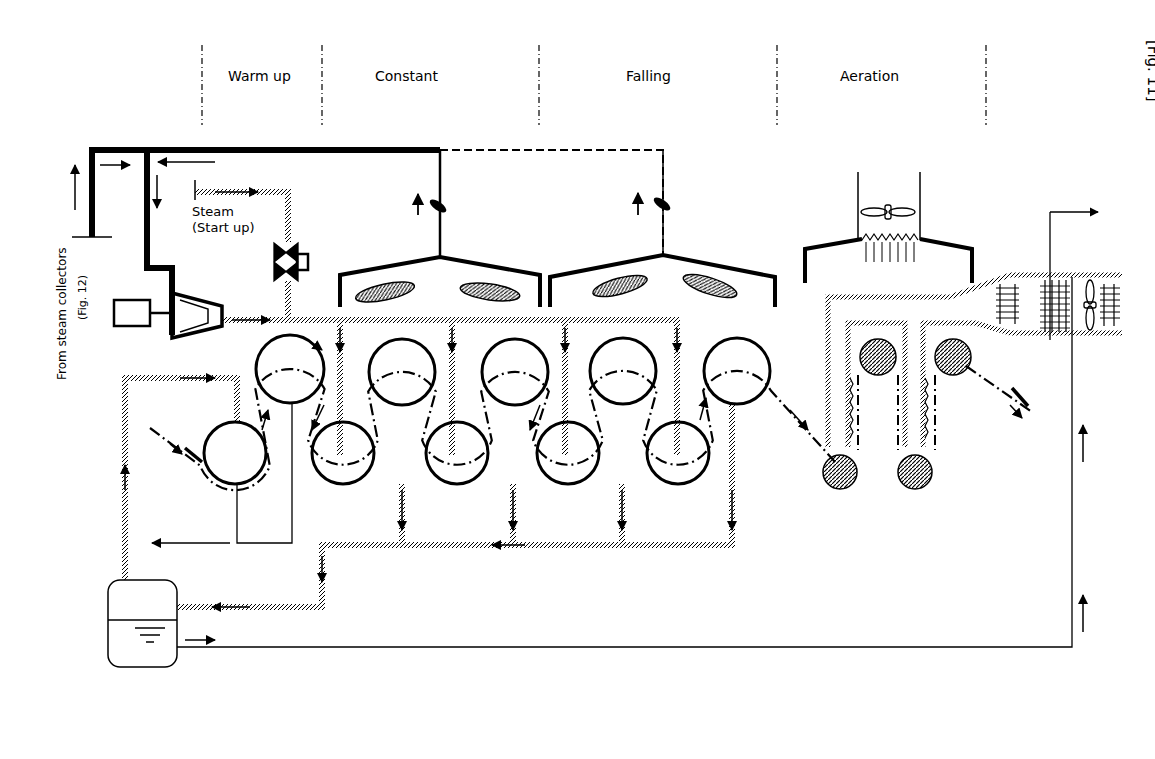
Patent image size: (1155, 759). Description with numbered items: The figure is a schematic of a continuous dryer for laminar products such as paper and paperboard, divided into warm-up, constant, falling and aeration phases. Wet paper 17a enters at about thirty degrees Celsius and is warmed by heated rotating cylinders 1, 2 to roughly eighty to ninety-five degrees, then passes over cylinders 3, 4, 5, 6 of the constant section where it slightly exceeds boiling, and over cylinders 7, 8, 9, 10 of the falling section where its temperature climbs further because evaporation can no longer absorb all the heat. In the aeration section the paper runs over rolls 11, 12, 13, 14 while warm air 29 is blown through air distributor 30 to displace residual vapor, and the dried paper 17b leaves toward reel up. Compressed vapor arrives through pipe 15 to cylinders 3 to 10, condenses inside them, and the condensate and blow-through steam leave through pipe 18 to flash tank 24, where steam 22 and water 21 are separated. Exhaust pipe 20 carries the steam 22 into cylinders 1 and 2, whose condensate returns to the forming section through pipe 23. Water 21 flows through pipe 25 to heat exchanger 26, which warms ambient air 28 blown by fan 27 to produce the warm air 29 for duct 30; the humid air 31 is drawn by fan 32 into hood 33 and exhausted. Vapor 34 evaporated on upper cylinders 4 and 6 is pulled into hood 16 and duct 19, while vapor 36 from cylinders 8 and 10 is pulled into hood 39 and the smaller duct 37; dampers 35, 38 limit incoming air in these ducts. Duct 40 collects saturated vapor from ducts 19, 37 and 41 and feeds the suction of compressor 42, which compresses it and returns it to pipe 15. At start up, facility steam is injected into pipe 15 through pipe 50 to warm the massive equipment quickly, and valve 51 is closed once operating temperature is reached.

The heated rotating cylinder 1 is at (235, 453).
The heated rotating cylinder 2 is at (290, 369).
The heated rotating cylinder 3 is at (343, 453).
The heated rotating cylinder 4 is at (402, 372).
The heated rotating cylinder 5 is at (457, 453).
The heated rotating cylinder 6 is at (515, 372).
The heated rotating cylinder 7 is at (568, 453).
The heated rotating cylinder 8 is at (623, 371).
The heated rotating cylinder 9 is at (678, 453).
The heated rotating cylinder 10 is at (737, 371).
The aeration roll 11 is at (822, 486).
The aeration roll 12 is at (876, 376).
The aeration roll 13 is at (902, 490).
The aeration roll 14 is at (958, 374).
The pipe 15 is at (236, 326).
The hood 16 is at (484, 270).
The wet paper 17a is at (192, 464).
The dried paper 17b is at (1024, 416).
The pipe 18 is at (489, 548).
The duct 19 is at (438, 252).
The exhaust pipe 20 is at (120, 432).
The water 21 is at (118, 650).
The steam 22 is at (116, 600).
The pipe 23 is at (230, 544).
The flash tank 24 is at (116, 580).
The pipe 25 is at (216, 648).
The heat exchanger 26 is at (1048, 282).
The fan 27 is at (1090, 330).
The ambient air 28 is at (1110, 284).
The warm air 29 is at (1008, 320).
The air distributor 30 is at (826, 356).
The humid air 31 is at (864, 250).
The fan 32 is at (856, 212).
The hood 33 is at (930, 240).
The vapor 34 is at (384, 288).
The damper 35 is at (448, 206).
The vapor 36 is at (608, 276).
The duct 37 is at (660, 244).
The damper 38 is at (672, 204).
The hood 39 is at (736, 266).
The duct 40 is at (152, 238).
The duct 41 is at (101, 178).
The compressor 42 is at (161, 330).
The pipe 50 is at (300, 222).
The valve 51 is at (273, 262).